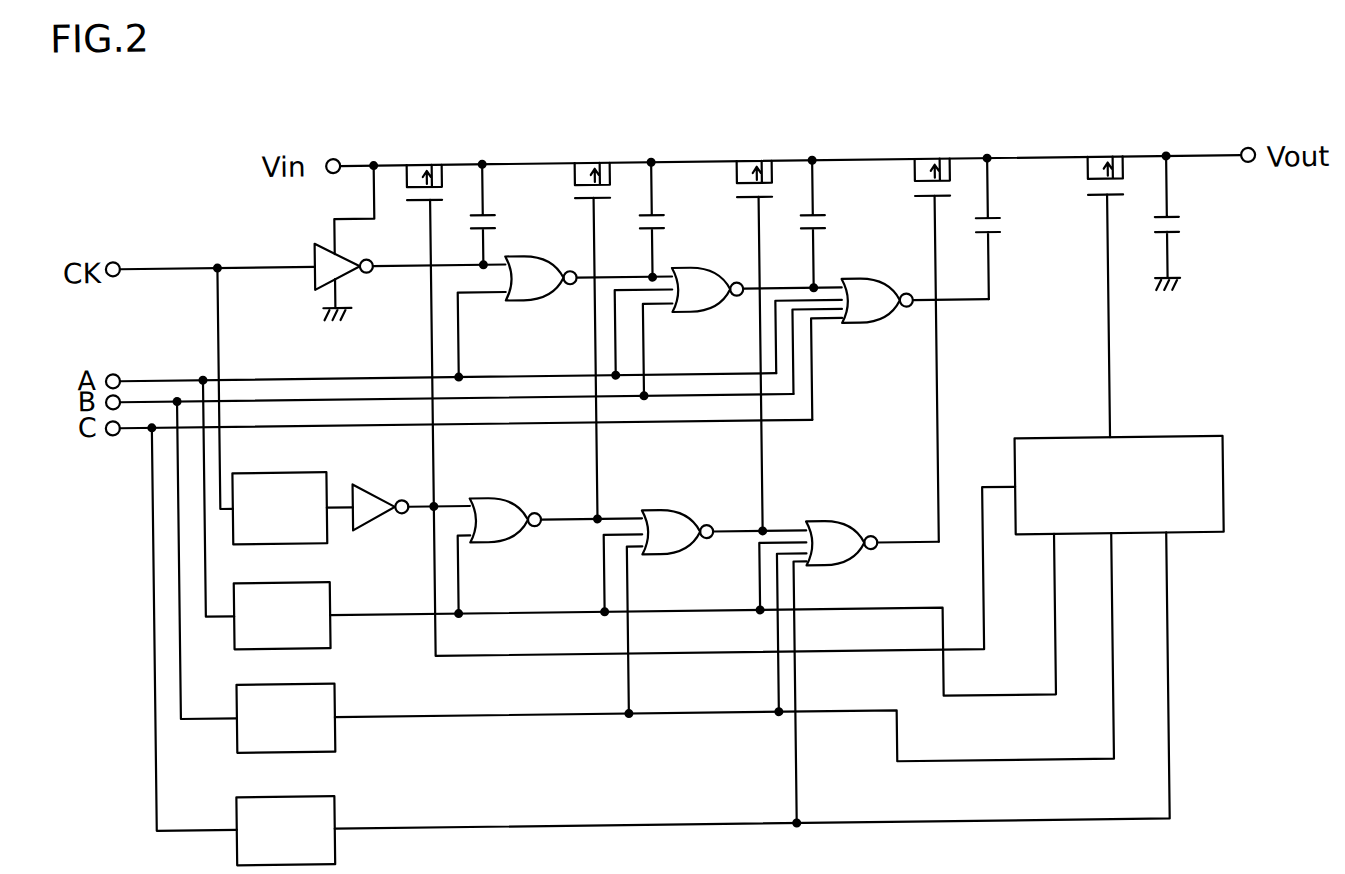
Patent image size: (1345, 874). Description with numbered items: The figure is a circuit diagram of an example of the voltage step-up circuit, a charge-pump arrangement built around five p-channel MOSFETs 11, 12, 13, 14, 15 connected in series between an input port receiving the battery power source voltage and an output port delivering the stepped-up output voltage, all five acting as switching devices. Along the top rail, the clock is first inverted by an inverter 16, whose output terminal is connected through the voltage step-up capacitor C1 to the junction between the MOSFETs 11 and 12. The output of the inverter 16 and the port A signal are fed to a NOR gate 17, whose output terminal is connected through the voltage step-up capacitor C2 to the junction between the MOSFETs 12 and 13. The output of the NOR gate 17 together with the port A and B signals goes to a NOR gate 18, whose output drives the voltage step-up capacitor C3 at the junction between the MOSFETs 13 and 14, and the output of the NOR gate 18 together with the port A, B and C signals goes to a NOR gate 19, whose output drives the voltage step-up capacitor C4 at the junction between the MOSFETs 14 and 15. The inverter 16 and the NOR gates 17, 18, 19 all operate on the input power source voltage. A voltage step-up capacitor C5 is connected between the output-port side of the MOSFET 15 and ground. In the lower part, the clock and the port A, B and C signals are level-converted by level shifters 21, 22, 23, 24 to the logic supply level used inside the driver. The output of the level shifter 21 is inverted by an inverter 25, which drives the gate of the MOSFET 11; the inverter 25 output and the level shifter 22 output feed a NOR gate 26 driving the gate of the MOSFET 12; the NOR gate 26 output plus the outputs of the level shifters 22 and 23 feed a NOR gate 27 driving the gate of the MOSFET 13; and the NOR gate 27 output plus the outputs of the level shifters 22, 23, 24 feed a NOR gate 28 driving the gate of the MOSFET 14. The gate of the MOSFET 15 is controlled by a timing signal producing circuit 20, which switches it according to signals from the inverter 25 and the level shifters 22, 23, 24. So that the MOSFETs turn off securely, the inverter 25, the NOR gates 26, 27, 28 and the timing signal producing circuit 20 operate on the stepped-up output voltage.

The p-channel MOSFET 11 is at (436, 157).
The p-channel MOSFET 12 is at (600, 156).
The p-channel MOSFET 13 is at (764, 156).
The p-channel MOSFET 14 is at (938, 151).
The p-channel MOSFET 15 is at (1121, 153).
The inverter 16 is at (315, 278).
The NOR gate 17 is at (540, 300).
The NOR gate 18 is at (710, 312).
The NOR gate 19 is at (886, 322).
The timing signal producing circuit 20 is at (1175, 441).
The level shifter 21 is at (301, 468).
The level shifter 22 is at (330, 591).
The level shifter 23 is at (332, 699).
The level shifter 24 is at (330, 804).
The inverter 25 is at (383, 488).
The NOR gate 26 is at (500, 495).
The NOR gate 27 is at (667, 508).
The NOR gate 28 is at (846, 522).
The voltage step-up capacitor C1 is at (502, 214).
The voltage step-up capacitor C2 is at (671, 220).
The voltage step-up capacitor C3 is at (835, 224).
The voltage step-up capacitor C4 is at (1009, 228).
The voltage step-up capacitor C5 is at (1188, 216).